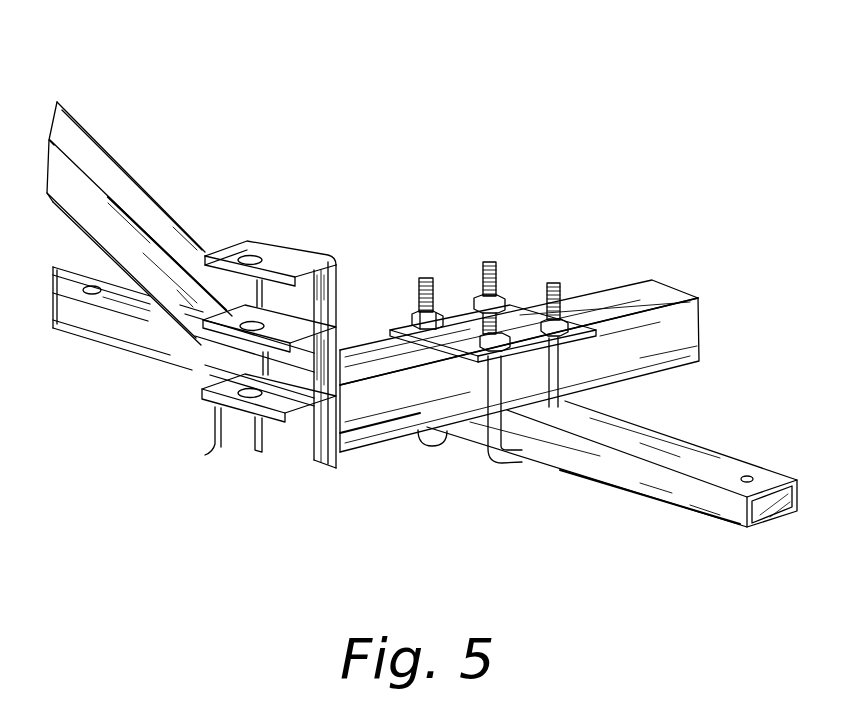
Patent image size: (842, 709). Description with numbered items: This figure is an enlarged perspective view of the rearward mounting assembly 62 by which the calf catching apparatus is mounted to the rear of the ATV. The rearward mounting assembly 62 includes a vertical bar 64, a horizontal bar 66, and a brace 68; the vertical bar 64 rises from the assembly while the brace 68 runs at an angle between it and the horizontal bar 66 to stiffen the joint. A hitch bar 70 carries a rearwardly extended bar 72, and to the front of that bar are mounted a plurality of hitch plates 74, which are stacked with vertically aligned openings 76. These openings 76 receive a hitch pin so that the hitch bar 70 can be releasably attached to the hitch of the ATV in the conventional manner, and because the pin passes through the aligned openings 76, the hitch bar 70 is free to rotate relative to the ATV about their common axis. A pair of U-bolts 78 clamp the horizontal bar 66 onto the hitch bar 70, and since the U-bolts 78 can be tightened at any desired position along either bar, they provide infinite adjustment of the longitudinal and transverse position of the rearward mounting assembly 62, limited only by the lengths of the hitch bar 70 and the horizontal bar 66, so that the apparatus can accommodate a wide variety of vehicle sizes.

The rearward mounting assembly 62 is at (208, 498).
The vertical bar 64 is at (56, 62).
The horizontal bar 66 is at (97, 323).
The brace 68 is at (140, 203).
The hitch bar 70 is at (614, 298).
The rearwardly extended bar 72 is at (683, 332).
The hitch plates 74 is at (297, 327).
The openings 76 is at (250, 255).
The U-bolts 78 is at (484, 262).